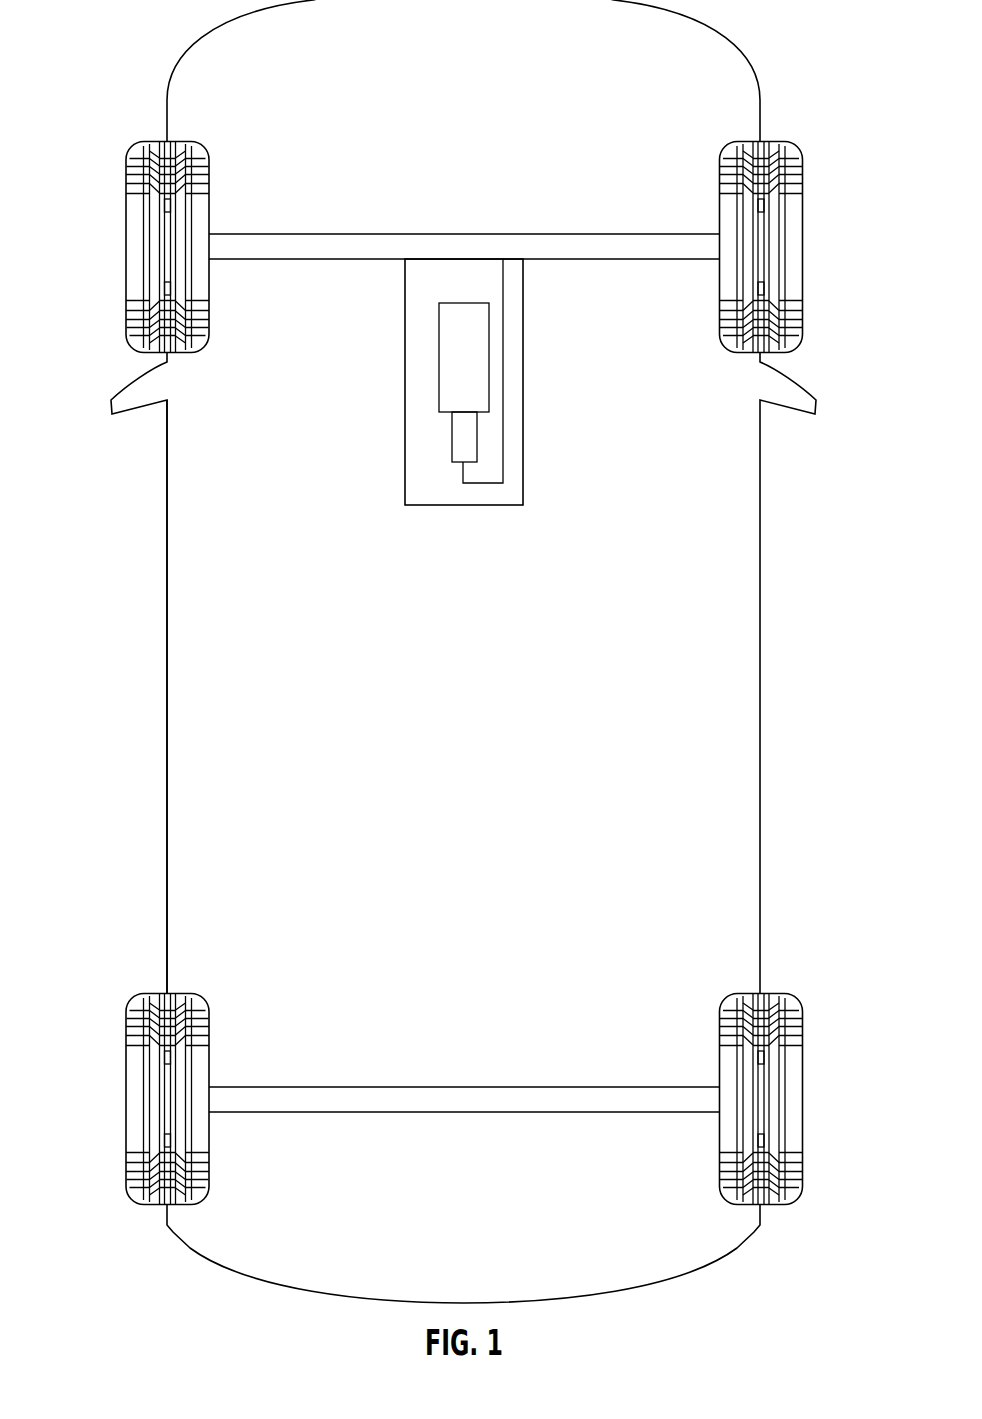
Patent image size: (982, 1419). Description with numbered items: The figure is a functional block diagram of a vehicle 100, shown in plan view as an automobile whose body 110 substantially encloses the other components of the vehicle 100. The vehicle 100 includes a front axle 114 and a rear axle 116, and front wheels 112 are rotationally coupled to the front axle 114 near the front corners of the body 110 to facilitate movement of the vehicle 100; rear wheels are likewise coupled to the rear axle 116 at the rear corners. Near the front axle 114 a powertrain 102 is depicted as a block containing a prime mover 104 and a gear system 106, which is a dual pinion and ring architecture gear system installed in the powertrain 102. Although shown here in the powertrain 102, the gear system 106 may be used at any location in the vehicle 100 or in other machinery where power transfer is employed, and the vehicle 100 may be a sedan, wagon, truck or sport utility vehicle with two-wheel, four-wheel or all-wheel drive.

The vehicle 100 is at (184, 46).
The powertrain 102 is at (405, 367).
The prime mover 104 is at (483, 370).
The gear system 106 is at (452, 450).
The body 110 is at (168, 779).
The front wheels 112 is at (126, 248).
The front axle 114 is at (270, 260).
The rear axle 116 is at (440, 1090).